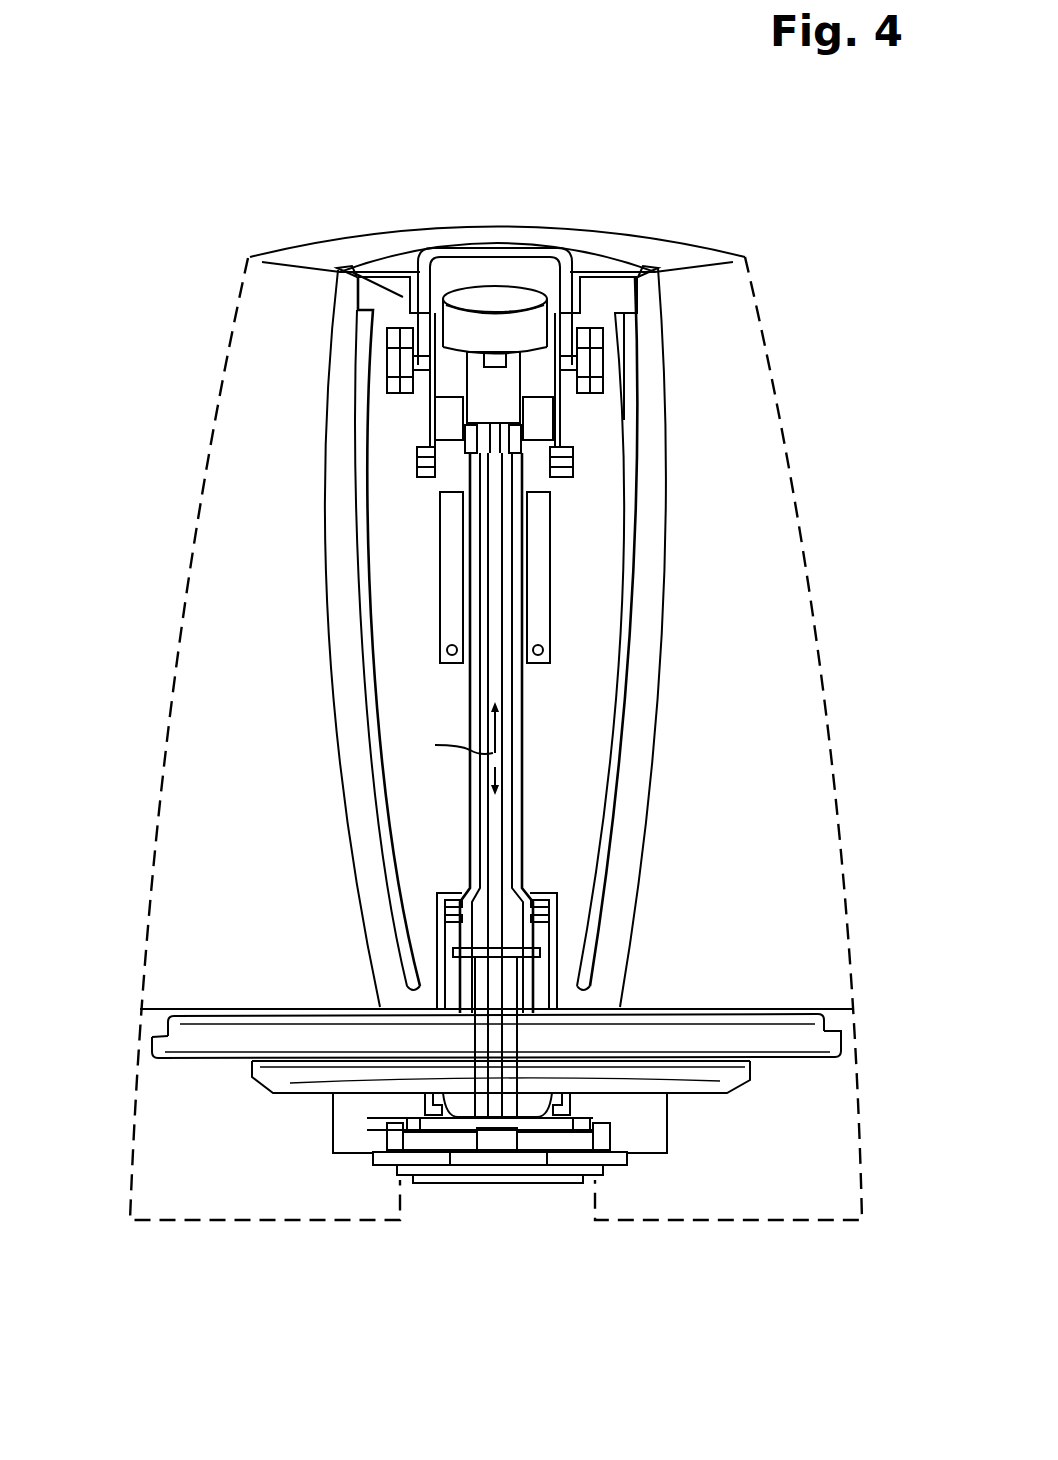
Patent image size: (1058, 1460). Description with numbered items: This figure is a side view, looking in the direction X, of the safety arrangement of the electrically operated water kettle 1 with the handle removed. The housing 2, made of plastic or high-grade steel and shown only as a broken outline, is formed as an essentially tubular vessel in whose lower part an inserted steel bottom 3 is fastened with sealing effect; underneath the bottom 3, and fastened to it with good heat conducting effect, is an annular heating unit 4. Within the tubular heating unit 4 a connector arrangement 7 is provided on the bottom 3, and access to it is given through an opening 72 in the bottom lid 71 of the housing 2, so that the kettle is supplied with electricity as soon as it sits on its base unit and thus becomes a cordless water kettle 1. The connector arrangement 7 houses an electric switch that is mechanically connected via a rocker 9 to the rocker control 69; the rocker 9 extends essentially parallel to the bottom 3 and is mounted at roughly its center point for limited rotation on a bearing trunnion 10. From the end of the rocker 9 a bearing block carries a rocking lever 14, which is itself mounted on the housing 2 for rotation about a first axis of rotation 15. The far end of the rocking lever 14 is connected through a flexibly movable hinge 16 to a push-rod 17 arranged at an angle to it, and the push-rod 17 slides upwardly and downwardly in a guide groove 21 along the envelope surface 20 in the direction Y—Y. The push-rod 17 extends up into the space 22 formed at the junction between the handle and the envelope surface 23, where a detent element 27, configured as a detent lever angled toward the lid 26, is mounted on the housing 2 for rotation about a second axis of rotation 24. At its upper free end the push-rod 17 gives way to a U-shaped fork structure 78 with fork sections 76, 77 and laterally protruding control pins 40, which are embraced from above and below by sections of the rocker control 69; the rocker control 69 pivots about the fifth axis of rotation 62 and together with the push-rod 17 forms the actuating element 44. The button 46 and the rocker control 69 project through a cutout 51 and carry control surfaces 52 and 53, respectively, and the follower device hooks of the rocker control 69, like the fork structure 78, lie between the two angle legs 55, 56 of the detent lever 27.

The water kettle 1 is at (192, 158).
The housing 2 is at (165, 712).
The bottom 3 is at (228, 1028).
The heating unit 4 is at (278, 1082).
The connector arrangement 7 is at (508, 1135).
The rocker 9 is at (623, 1118).
The bearing trunnion 10 is at (365, 1128).
The rocking lever 14 is at (457, 1112).
The first axis of rotation 15 is at (417, 1103).
The hinge 16 is at (730, 1082).
The push-rod 17 is at (497, 840).
The envelope surface 20 is at (600, 650).
The guide groove 21 is at (535, 736).
The space 22 is at (603, 450).
The envelope surface 23 is at (402, 642).
The second axis of rotation 24 is at (430, 470).
The lid 26 is at (344, 237).
The detent element 27 is at (463, 440).
The control pins 40 is at (423, 363).
The actuating element 44 is at (572, 297).
The button 46 is at (446, 233).
The cutout 51 is at (398, 255).
The control surface 52 is at (472, 247).
The control surface 53 is at (488, 293).
The angle leg 55 is at (435, 403).
The angle leg 56 is at (560, 368).
The fifth axis of rotation 62 is at (423, 337).
The rocker control 69 is at (527, 283).
The bottom lid 71 is at (650, 1215).
The opening 72 is at (405, 1197).
The fork section 76 is at (565, 348).
The fork section 77 is at (410, 433).
The fork structure 78 is at (472, 448).